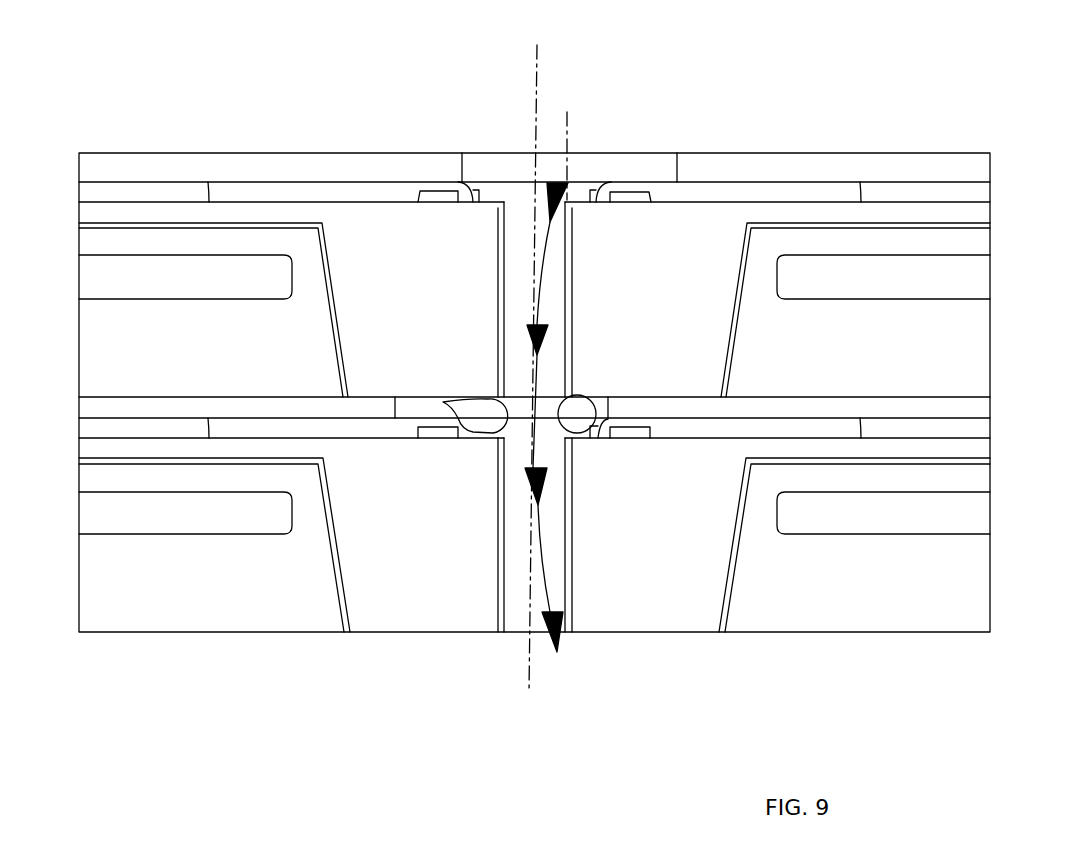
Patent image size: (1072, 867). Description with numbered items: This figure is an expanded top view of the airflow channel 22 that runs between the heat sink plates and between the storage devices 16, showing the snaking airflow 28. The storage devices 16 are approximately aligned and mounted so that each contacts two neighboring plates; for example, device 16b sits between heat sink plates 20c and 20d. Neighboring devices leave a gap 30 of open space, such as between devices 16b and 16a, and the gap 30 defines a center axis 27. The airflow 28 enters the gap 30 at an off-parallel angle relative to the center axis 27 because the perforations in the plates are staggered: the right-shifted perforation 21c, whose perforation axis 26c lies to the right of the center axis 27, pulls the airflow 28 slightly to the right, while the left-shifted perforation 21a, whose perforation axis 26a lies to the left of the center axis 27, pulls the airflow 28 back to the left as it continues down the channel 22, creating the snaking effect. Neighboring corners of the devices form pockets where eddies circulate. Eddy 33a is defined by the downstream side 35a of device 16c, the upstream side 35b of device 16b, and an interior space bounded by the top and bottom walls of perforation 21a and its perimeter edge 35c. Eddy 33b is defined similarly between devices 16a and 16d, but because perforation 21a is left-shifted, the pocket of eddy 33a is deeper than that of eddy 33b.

The storage devices 16 is at (422, 540).
The storage device 16a is at (965, 602).
The storage device 16b is at (150, 602).
The storage device 16c is at (147, 381).
The storage device 16d is at (965, 381).
The heat sink plate 20c is at (825, 165).
The heat sink plate 20d is at (778, 405).
The perforation 21a is at (427, 407).
The perforation 21c is at (643, 165).
The airflow channel 22 is at (537, 222).
The perforation axis 26a is at (498, 459).
The perforation axis 26c is at (567, 132).
The center axis 27 is at (540, 72).
The airflow 28 is at (535, 563).
The gap 30 is at (513, 228).
The eddy 33a is at (485, 410).
The eddy 33b is at (582, 436).
The downstream side 35a is at (437, 397).
The upstream side 35b is at (402, 420).
The perimeter edge 35c is at (390, 410).